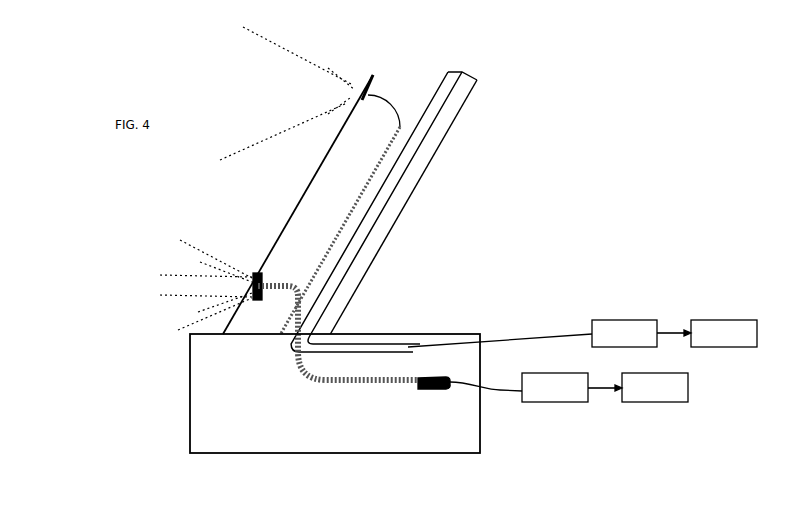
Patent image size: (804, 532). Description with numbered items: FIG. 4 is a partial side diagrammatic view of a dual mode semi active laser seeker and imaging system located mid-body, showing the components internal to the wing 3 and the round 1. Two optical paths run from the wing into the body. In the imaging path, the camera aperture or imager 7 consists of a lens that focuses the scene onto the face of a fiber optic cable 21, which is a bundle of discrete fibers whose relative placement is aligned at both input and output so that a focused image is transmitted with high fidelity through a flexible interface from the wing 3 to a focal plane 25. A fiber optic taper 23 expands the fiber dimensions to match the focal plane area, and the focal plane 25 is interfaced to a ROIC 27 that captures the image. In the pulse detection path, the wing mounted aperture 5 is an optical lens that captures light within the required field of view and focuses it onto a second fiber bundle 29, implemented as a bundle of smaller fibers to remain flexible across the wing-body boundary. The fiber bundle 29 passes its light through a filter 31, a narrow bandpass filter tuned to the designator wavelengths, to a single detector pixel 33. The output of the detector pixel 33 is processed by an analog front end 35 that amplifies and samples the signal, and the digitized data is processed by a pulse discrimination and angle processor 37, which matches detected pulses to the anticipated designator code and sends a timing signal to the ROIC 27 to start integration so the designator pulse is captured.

The round 1 is at (268, 416).
The wing 3 is at (436, 88).
The aperture 5 is at (344, 90).
The imager 7 is at (243, 280).
The fiber optic cable 21 is at (351, 367).
The fiber optic taper 23 is at (435, 363).
The focal plane 25 is at (459, 366).
The ROIC 27 is at (542, 362).
The second fiber bundle 29 is at (418, 127).
The filter 31 is at (417, 327).
The detector pixel 33 is at (423, 340).
The analog front end 35 is at (634, 314).
The pulse discrimination and angle processor 37 is at (727, 313).